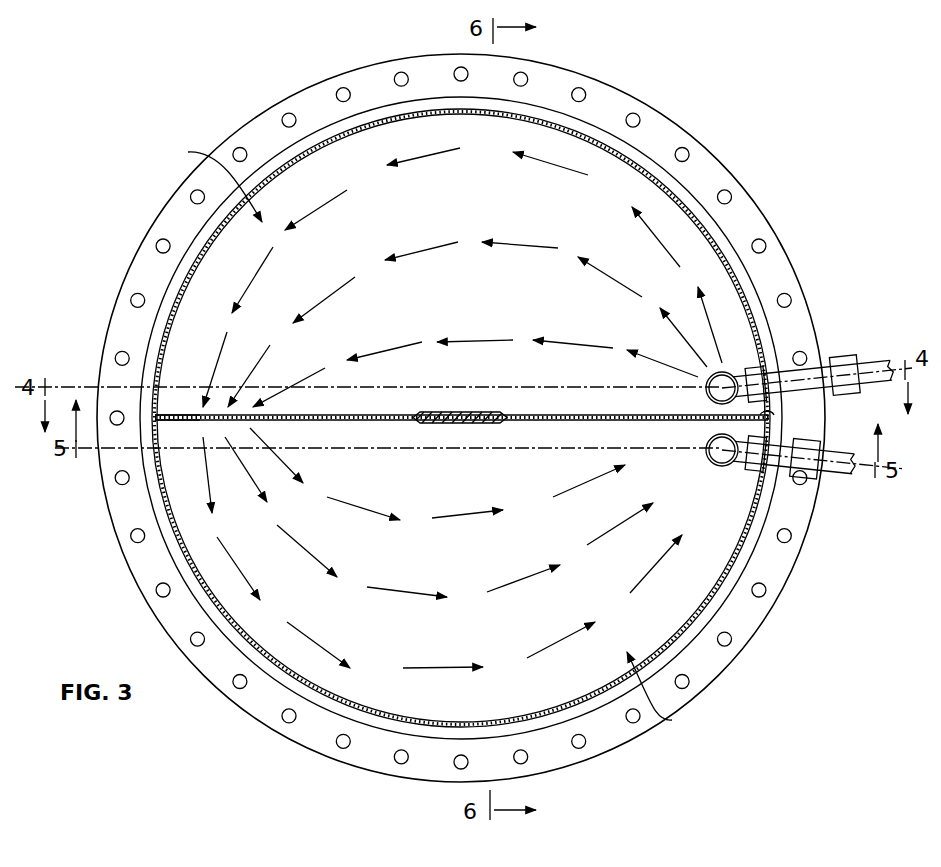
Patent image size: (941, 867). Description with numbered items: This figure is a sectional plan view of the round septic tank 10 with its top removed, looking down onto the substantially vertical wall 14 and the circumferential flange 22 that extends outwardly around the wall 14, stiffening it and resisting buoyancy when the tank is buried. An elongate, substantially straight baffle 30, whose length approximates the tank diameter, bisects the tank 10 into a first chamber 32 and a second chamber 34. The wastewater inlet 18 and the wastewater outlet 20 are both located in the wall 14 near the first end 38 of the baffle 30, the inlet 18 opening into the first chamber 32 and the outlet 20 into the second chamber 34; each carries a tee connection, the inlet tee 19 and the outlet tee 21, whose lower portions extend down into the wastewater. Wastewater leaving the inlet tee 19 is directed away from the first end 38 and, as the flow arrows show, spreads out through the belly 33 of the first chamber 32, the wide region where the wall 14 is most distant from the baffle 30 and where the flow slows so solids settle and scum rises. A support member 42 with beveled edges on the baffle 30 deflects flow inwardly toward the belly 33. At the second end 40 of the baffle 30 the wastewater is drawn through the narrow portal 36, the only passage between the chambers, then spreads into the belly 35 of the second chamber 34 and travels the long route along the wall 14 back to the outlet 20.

The round septic tank 10 is at (262, 88).
The wall 14 is at (274, 175).
The wastewater inlet 18 is at (862, 357).
The inlet tee 19 is at (706, 397).
The wastewater outlet 20 is at (836, 484).
The outlet tee 21 is at (713, 466).
The circumferential flange 22 is at (725, 685).
The baffle 30 is at (308, 415).
The first chamber 32 is at (209, 182).
The belly of the first chamber 33 is at (472, 302).
The second chamber 34 is at (672, 720).
The belly of the second chamber 35 is at (472, 554).
The portal 36 is at (198, 413).
The first end of the baffle 38 is at (772, 411).
The second end of the baffle 40 is at (168, 422).
The support member 42 is at (456, 411).